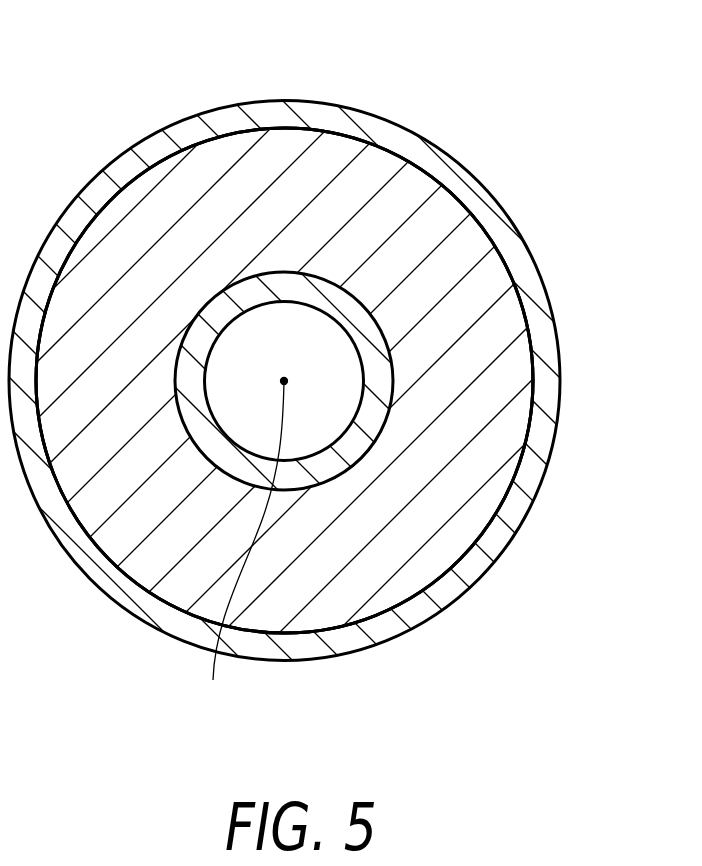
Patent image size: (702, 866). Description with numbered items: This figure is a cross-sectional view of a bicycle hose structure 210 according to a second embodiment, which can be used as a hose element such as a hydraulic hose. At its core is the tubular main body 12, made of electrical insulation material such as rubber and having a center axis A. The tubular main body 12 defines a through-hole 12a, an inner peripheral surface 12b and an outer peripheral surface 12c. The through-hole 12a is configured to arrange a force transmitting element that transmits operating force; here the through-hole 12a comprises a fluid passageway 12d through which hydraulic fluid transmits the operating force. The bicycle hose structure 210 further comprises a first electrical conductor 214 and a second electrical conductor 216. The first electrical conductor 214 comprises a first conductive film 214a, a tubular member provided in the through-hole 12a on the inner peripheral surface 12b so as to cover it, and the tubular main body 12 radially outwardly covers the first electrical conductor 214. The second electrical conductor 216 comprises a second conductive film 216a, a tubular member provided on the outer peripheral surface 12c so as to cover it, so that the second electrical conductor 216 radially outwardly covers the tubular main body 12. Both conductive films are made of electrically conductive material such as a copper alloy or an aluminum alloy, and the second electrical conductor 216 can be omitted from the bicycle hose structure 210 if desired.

The bicycle hose structure 210 is at (351, 433).
The second electrical conductor 216 is at (505, 192).
The second conductive film 216a is at (508, 247).
The tubular main body 12 is at (180, 167).
The through-hole 12a is at (237, 423).
The inner peripheral surface 12b is at (390, 358).
The outer peripheral surface 12c is at (530, 336).
The fluid passageway 12d is at (333, 440).
The first electrical conductor 214 is at (298, 303).
The first conductive film 214a is at (215, 322).
The center axis A is at (245, 544).